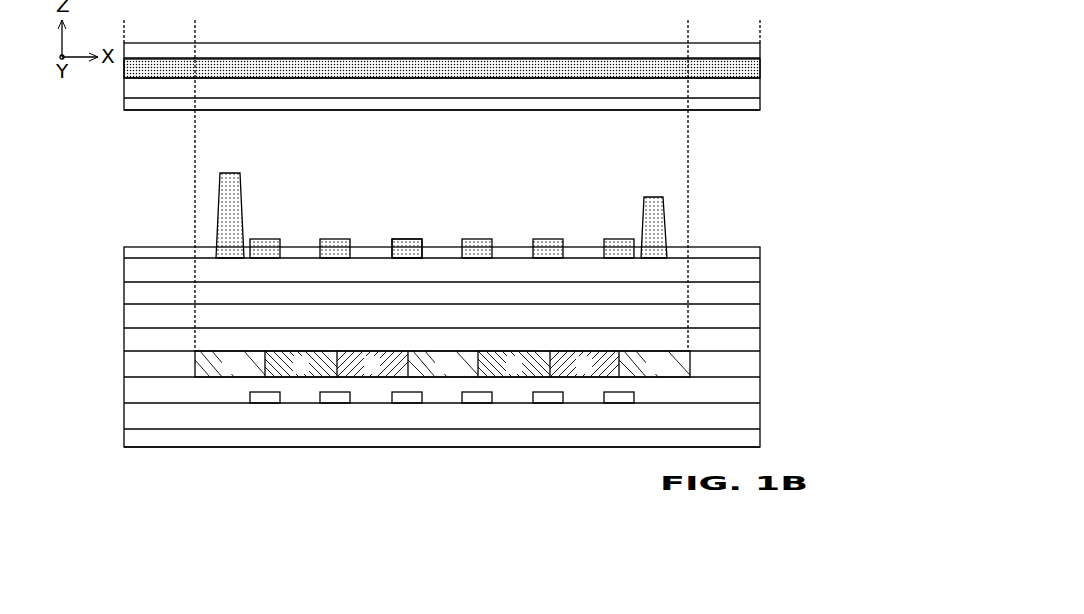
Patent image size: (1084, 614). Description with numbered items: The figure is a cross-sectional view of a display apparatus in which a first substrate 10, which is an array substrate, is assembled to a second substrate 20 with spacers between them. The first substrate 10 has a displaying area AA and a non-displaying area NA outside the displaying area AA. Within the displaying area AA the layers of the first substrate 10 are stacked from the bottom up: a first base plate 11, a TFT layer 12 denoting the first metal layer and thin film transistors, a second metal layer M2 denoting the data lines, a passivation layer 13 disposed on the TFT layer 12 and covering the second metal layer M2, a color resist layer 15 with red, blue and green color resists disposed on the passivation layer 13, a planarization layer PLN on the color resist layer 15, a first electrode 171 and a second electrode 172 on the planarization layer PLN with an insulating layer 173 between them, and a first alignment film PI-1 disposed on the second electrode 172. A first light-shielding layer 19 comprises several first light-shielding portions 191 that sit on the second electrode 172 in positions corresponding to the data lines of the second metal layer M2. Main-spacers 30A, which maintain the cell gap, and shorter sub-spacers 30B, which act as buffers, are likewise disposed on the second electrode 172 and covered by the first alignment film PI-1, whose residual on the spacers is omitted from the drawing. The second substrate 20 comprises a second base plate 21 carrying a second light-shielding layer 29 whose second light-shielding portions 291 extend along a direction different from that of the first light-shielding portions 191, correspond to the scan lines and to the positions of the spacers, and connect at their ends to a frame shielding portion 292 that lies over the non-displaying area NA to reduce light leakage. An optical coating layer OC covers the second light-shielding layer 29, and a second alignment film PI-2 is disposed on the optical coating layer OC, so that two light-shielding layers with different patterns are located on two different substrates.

The first substrate 10 is at (773, 243).
The first base plate 11 is at (130, 437).
The TFT layer 12 is at (112, 406).
The passivation layer 13 is at (130, 393).
The color resist layer 15 is at (128, 365).
The first electrode 171 is at (128, 317).
The second electrode 172 is at (128, 270).
The insulating layer 173 is at (128, 294).
The first light-shielding layer 19 is at (619, 237).
The first light-shielding portions 191 is at (410, 240).
The second substrate 20 is at (783, 44).
The second base plate 21 is at (755, 52).
The second light-shielding layer 29 is at (722, 82).
The second light-shielding portions 291 is at (380, 70).
The frame shielding portion 292 is at (166, 70).
The main-spacers 30A is at (228, 178).
The sub-spacers 30B is at (656, 202).
The second metal layer M2 is at (268, 395).
The optical coating layer OC is at (128, 92).
The first alignment film PI-1 is at (124, 247).
The second alignment film PI-2 is at (128, 104).
The planarization layer PLN is at (128, 338).
The non-displaying area NA is at (193, 30).
The displaying area AA is at (686, 30).